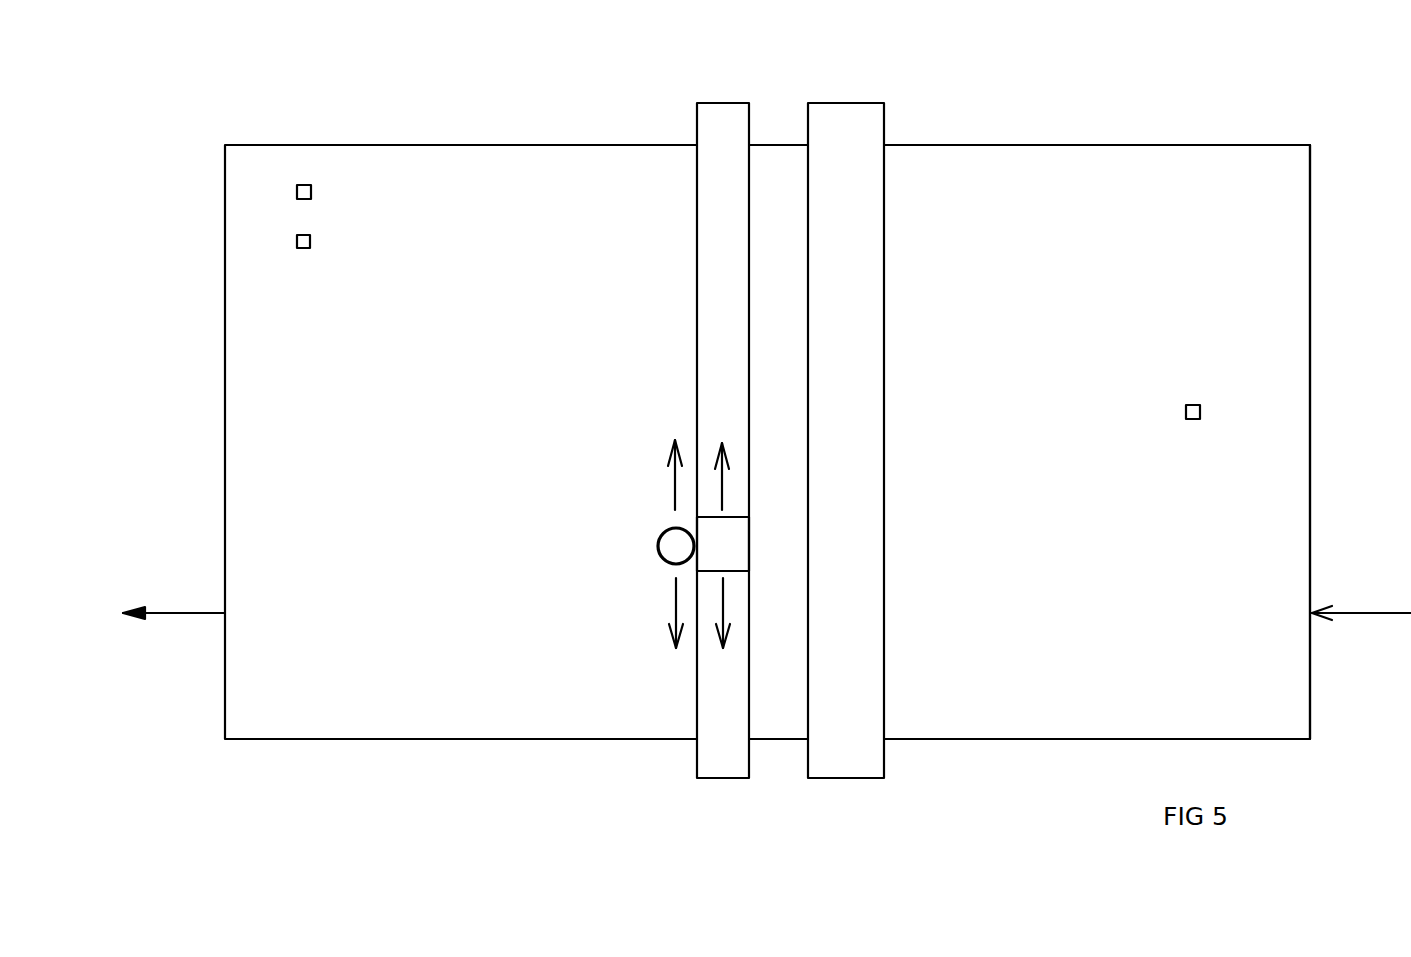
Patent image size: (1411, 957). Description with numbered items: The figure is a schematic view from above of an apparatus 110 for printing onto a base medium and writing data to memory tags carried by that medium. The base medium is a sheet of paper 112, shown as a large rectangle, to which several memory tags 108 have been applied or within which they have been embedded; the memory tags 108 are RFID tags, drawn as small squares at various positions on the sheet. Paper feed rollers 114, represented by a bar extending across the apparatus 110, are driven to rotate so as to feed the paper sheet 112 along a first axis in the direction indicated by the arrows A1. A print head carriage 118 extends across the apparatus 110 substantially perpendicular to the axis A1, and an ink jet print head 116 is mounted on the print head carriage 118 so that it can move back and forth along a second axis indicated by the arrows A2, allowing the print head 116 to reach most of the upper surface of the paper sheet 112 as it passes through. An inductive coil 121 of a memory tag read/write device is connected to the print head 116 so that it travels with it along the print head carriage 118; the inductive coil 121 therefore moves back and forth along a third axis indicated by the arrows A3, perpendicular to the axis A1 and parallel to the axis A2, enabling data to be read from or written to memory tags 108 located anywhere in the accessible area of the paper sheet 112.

The memory tag 108 is at (297, 192).
The apparatus 110 is at (1105, 120).
The sheet paper 112 is at (1310, 307).
The paper feed rollers 114 is at (855, 778).
The print head 116 is at (733, 551).
The print head carriage 118 is at (723, 778).
The inductive coil 121 is at (658, 548).
The first axis direction arrows A1 is at (185, 613).
The second axis direction arrows A2 is at (722, 472).
The third axis direction arrows A3 is at (672, 475).